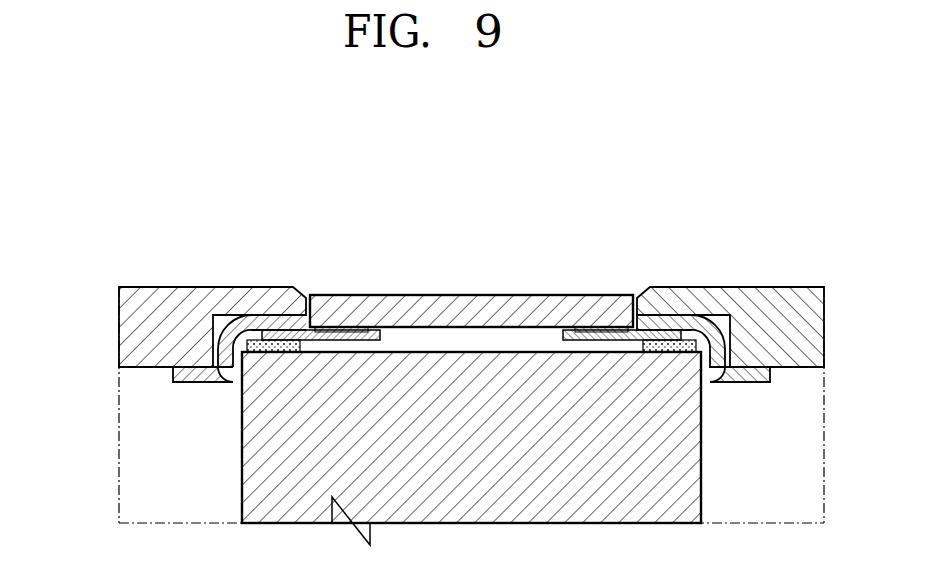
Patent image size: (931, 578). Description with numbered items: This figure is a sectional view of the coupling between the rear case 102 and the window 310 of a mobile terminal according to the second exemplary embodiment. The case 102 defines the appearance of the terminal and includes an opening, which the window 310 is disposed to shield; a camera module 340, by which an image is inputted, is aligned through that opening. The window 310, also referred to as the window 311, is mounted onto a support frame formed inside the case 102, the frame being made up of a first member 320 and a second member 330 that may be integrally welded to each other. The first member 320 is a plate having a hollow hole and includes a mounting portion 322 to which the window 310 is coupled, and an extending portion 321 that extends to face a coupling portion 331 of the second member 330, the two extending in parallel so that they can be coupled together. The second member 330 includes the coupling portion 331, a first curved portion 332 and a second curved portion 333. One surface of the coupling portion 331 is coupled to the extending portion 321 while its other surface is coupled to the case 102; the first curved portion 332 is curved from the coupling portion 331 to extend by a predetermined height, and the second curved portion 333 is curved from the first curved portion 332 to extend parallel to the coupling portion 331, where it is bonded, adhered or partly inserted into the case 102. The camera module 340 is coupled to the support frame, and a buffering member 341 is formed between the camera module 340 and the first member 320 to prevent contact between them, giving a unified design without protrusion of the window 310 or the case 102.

The rear case 102 is at (778, 300).
The window 310 is at (542, 303).
The window 311 is at (612, 333).
The first member 320 is at (321, 267).
The extending portion 321 is at (293, 328).
The mounting portion 322 is at (341, 336).
The second member 330 is at (158, 346).
The coupling portion 331 is at (270, 318).
The first curved portion 332 is at (223, 350).
The second curved portion 333 is at (173, 379).
The camera module 340 is at (237, 451).
The buffering member 341 is at (663, 347).